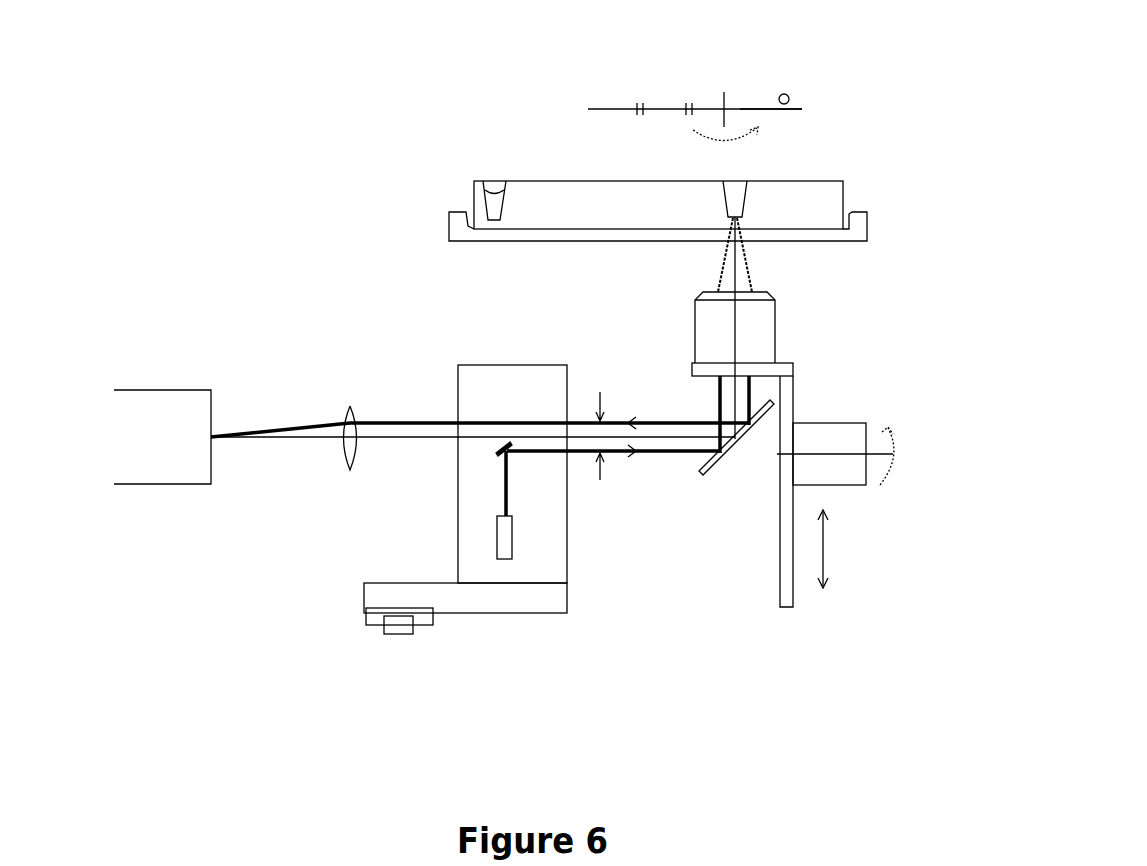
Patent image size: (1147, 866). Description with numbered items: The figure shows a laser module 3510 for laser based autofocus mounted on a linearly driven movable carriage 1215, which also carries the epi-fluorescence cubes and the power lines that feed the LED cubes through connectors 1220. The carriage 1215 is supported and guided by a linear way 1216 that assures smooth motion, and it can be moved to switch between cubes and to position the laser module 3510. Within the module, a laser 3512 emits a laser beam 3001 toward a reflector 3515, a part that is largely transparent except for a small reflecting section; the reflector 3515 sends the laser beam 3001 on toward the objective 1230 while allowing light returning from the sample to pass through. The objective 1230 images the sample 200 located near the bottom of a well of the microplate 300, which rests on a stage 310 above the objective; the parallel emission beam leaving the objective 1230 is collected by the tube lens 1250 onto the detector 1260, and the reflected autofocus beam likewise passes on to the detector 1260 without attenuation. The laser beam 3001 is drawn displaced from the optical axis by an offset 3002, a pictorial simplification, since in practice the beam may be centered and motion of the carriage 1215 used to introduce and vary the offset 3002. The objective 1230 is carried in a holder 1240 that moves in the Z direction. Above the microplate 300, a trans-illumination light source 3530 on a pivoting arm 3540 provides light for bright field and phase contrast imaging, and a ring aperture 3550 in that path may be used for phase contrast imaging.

The sample 200 is at (496, 190).
The microplate 300 is at (845, 196).
The stage 310 is at (870, 224).
The movable carriage 1215 is at (487, 613).
The linear way 1216 is at (395, 634).
The connectors 1220 is at (718, 478).
The objective 1230 is at (776, 330).
The objective holder 1240 is at (795, 392).
The tube lens 1250 is at (349, 406).
The detector 1260 is at (177, 390).
The laser beam 3001 is at (508, 481).
The offset 3002 is at (480, 328).
The laser module 3510 is at (493, 365).
The laser 3512 is at (497, 528).
The reflector 3515 is at (498, 456).
The light source 3530 is at (786, 93).
The arm 3540 is at (800, 106).
The ring aperture 3550 is at (695, 92).